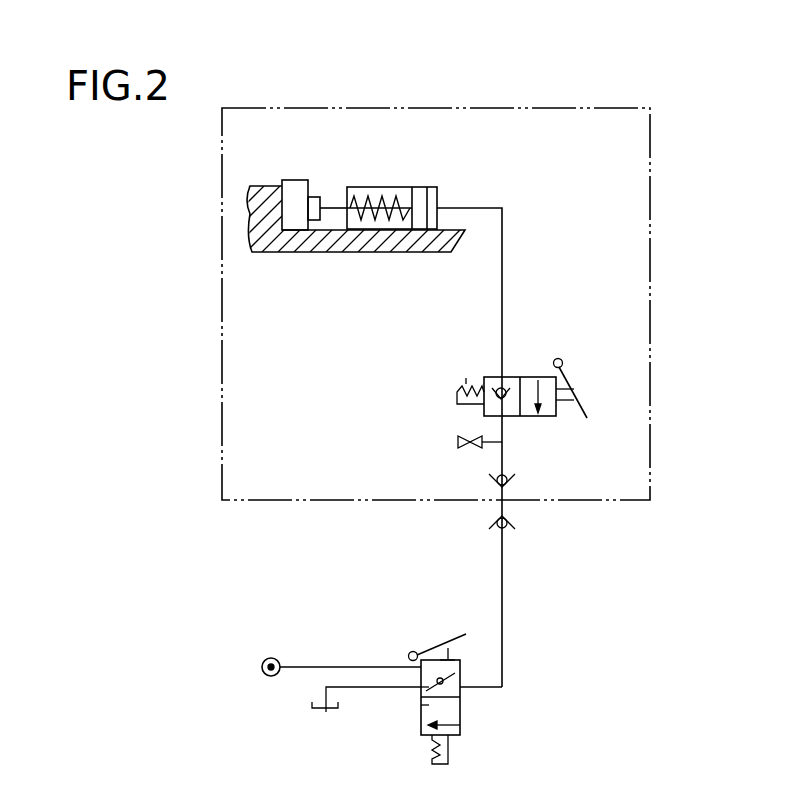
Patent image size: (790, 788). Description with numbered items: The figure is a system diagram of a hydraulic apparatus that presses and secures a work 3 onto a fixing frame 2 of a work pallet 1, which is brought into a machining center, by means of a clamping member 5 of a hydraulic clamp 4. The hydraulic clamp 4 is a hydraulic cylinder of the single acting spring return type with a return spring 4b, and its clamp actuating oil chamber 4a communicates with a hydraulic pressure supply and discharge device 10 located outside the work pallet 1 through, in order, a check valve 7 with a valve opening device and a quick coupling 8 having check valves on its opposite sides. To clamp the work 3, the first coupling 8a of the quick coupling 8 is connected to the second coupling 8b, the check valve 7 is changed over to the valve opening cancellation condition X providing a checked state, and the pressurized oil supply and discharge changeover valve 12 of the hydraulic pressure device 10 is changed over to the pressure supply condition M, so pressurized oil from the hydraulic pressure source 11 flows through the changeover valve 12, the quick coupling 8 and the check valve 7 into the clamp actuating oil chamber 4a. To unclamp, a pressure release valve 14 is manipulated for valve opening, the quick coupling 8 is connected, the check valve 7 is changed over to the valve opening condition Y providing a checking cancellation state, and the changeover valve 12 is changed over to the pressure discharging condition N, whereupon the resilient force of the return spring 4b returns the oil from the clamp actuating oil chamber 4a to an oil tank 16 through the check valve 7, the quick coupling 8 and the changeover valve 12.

The work pallet 1 is at (652, 296).
The fixing frame 2 is at (263, 240).
The work 3 is at (288, 178).
The hydraulic clamp 4 is at (408, 185).
The clamp actuating oil chamber 4a is at (440, 195).
The return spring 4b is at (367, 195).
The clamping member 5 is at (317, 195).
The check valve with valve opening device 7 is at (585, 397).
The quick coupling 8 is at (552, 528).
The first coupling 8a is at (504, 530).
The second coupling 8b is at (508, 486).
The hydraulic pressure supply and discharge device 10 is at (355, 648).
The hydraulic pressure source 11 is at (271, 657).
The pressurized oil supply and discharge changeover valve 12 is at (441, 643).
The pressure release valve 14 is at (458, 443).
The oil tank 16 is at (325, 713).
The valve opening cancellation condition X is at (490, 376).
The valve opening condition Y is at (532, 376).
The pressure supply condition M is at (461, 681).
The pressure discharging condition N is at (461, 722).